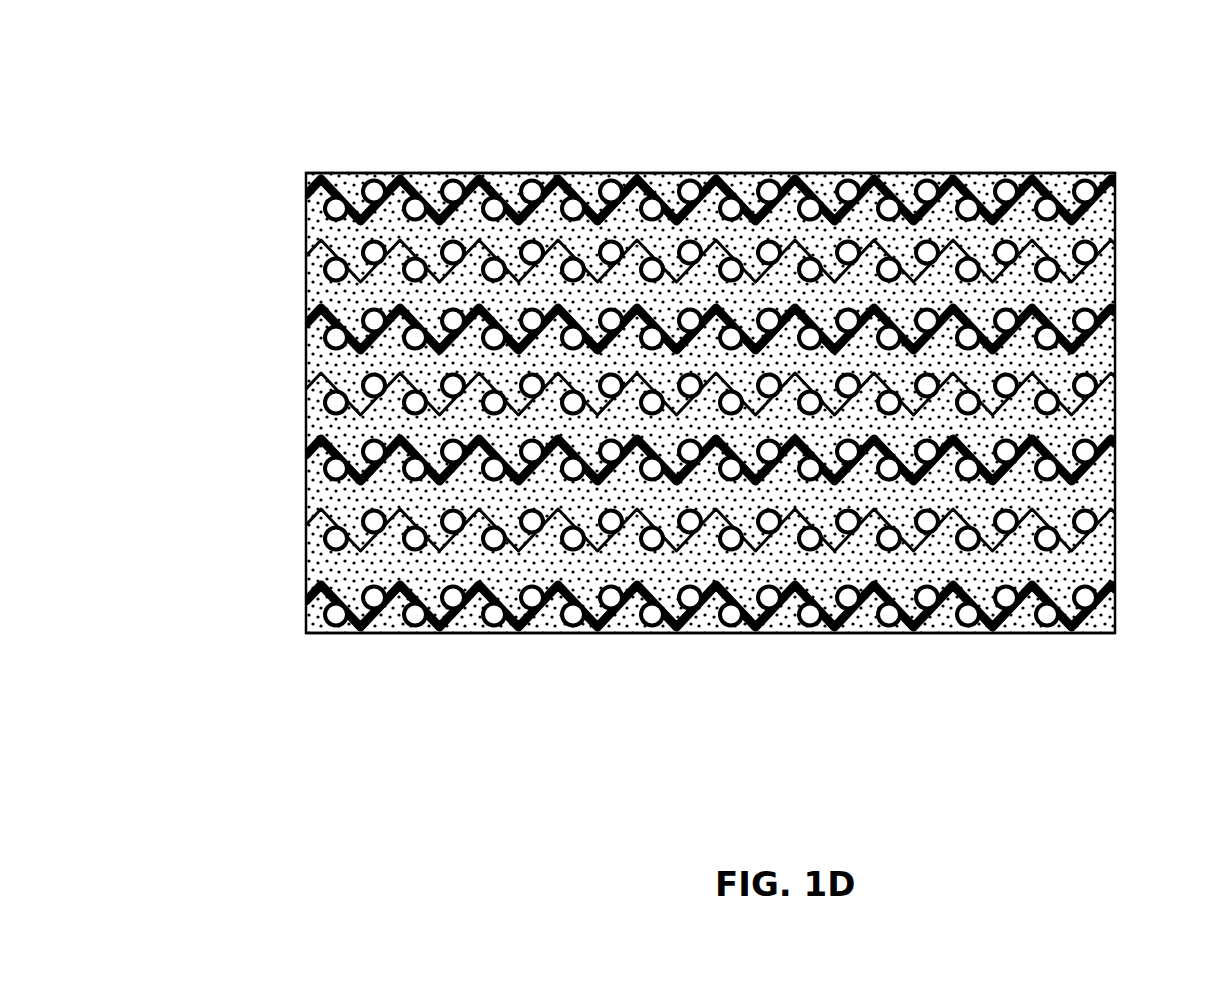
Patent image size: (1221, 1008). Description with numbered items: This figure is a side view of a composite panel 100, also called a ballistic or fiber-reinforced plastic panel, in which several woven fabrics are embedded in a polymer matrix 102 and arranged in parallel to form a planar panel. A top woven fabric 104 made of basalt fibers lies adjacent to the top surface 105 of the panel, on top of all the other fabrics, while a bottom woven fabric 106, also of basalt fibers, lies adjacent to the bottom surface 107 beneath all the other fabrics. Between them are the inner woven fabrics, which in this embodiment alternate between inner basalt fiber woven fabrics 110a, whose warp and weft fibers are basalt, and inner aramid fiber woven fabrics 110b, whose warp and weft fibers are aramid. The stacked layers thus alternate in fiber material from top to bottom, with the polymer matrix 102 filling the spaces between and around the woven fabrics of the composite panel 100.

The composite panel 100 is at (178, 51).
The polymer matrix 102 is at (1117, 238).
The top woven fabric 104 is at (298, 190).
The top surface 105 is at (415, 173).
The bottom woven fabric 106 is at (298, 594).
The bottom surface 107 is at (428, 632).
The inner basalt fiber woven fabric 110a is at (298, 321).
The inner aramid fiber woven fabric 110b is at (298, 252).